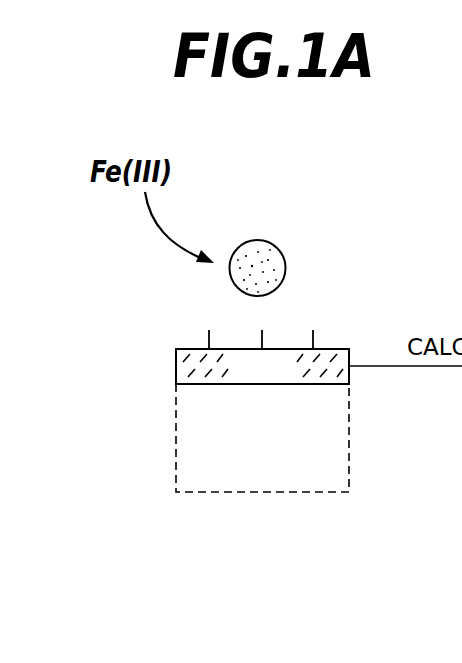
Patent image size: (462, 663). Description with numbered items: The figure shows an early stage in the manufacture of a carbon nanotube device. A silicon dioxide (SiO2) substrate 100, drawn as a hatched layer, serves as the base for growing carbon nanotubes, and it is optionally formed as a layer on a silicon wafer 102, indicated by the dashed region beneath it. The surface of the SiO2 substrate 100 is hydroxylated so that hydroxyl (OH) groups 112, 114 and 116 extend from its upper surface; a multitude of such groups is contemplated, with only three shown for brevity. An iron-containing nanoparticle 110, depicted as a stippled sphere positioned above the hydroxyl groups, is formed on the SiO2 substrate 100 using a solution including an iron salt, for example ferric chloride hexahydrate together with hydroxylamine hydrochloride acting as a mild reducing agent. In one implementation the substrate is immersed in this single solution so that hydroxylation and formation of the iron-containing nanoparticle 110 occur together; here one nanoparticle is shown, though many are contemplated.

The silicon dioxide substrate 100 is at (168, 389).
The silicon wafer 102 is at (338, 463).
The iron-containing nanoparticle 110 is at (258, 240).
The hydroxyl group 112 is at (188, 311).
The hydroxyl group 114 is at (284, 300).
The hydroxyl group 116 is at (335, 312).